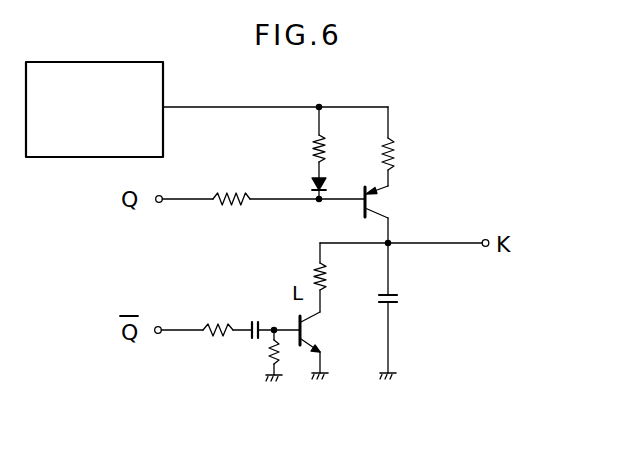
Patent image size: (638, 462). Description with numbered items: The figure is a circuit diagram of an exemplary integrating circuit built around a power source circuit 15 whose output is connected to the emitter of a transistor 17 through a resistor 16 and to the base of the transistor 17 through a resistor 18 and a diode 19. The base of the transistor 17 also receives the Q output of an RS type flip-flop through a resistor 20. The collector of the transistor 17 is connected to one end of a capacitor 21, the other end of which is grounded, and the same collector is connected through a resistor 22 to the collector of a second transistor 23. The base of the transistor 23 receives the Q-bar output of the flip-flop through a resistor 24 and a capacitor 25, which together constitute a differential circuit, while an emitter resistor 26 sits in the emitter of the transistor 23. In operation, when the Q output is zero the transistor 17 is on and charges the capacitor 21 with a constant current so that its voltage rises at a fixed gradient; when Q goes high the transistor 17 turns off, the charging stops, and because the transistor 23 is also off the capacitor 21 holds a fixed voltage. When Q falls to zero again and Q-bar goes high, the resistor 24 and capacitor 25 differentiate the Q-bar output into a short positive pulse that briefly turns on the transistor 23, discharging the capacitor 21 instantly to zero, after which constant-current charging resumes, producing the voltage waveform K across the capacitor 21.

The power source circuit 15 is at (130, 62).
The resistor 16 is at (394, 153).
The transistor 17 is at (381, 202).
The resistor 18 is at (324, 151).
The diode 19 is at (325, 190).
The resistor 20 is at (245, 204).
The capacitor 21 is at (397, 300).
The resistor 22 is at (327, 275).
The transistor 23 is at (318, 350).
The resistor 24 is at (219, 325).
The capacitor 25 is at (255, 322).
The emitter resistor 26 is at (270, 360).